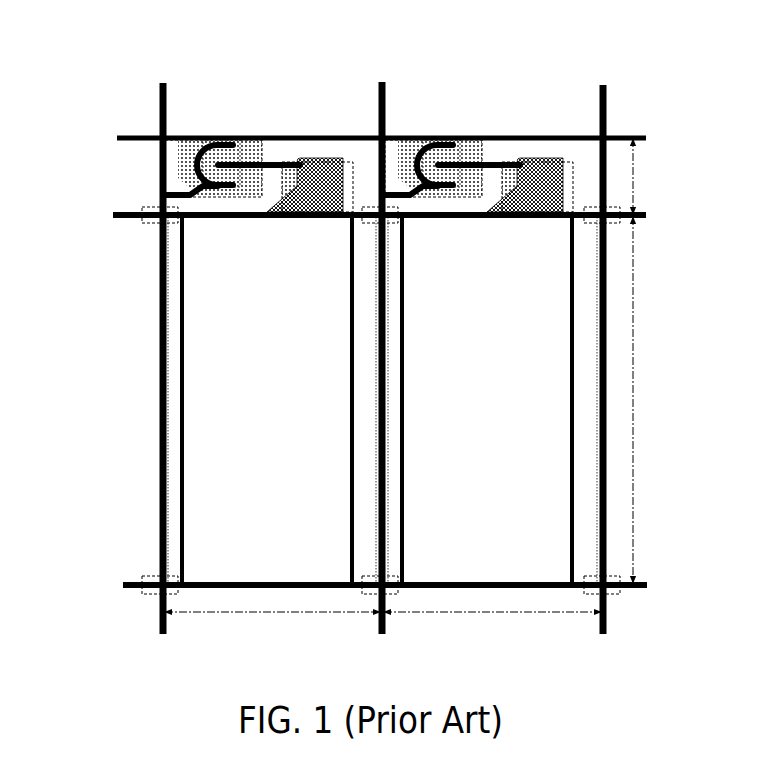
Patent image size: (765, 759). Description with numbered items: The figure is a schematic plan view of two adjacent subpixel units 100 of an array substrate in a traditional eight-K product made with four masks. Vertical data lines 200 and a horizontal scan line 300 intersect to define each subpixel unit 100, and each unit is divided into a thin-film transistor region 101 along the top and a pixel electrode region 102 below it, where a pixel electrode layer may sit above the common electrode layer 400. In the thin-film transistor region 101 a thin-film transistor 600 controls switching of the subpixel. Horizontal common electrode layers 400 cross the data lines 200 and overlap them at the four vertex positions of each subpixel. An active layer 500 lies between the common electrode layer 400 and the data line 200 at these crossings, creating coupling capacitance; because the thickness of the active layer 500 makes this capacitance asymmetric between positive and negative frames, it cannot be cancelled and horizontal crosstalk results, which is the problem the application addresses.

The subpixel unit 100 is at (383, 629).
The thin-film transistor region 101 is at (657, 176).
The pixel electrode region 102 is at (656, 400).
The data line 200 is at (167, 103).
The scan line 300 is at (118, 134).
The common electrode layer 400 is at (180, 380).
The active layer 500 is at (147, 208).
The thin-film transistor 600 is at (276, 137).